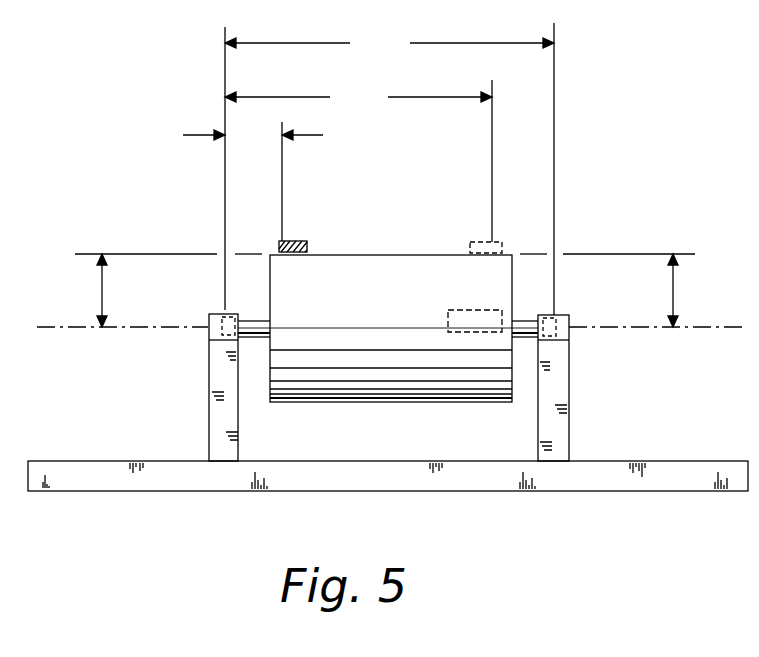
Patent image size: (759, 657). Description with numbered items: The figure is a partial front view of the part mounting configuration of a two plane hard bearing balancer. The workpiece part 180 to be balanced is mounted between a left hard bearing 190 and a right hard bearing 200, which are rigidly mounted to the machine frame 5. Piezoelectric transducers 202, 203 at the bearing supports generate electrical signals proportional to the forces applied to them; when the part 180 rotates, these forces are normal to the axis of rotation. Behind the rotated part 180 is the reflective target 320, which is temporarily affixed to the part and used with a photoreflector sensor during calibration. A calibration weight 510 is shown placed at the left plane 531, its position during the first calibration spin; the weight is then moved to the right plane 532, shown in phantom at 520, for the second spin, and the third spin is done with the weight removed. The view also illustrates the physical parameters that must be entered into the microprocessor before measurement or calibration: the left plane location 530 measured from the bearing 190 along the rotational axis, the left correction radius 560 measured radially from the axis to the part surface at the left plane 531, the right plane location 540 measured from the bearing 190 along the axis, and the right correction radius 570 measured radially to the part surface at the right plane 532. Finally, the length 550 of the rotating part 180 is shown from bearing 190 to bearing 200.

The machine frame 5 is at (120, 458).
The workpiece part 180 is at (410, 255).
The hard bearing 190 is at (237, 316).
The hard bearing 200 is at (553, 317).
The piezoelectric transducer 202 is at (209, 315).
The piezoelectric transducer 203 is at (569, 318).
The reflective target 320 is at (462, 310).
The calibration weight 510 is at (303, 241).
The calibration weight in phantom position 520 is at (495, 242).
The left plane location 530 is at (253, 136).
The left plane 531 is at (282, 178).
The right plane 532 is at (492, 166).
The right plane location 540 is at (358, 98).
The length of rotating part 550 is at (389, 44).
The left correction radius 560 is at (98, 290).
The right correction radius 570 is at (674, 290).